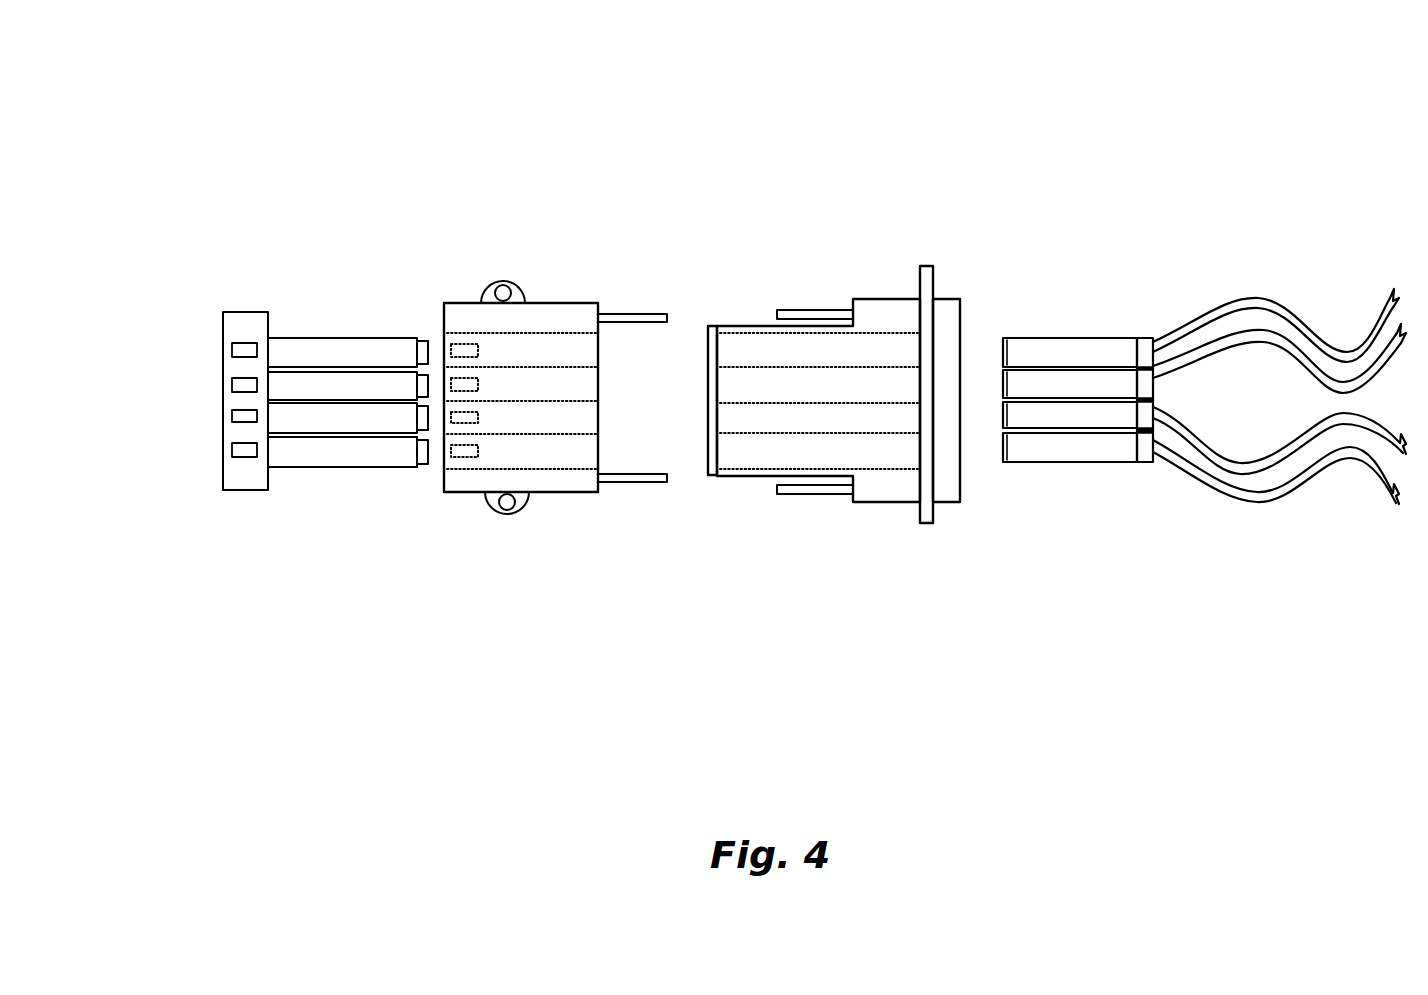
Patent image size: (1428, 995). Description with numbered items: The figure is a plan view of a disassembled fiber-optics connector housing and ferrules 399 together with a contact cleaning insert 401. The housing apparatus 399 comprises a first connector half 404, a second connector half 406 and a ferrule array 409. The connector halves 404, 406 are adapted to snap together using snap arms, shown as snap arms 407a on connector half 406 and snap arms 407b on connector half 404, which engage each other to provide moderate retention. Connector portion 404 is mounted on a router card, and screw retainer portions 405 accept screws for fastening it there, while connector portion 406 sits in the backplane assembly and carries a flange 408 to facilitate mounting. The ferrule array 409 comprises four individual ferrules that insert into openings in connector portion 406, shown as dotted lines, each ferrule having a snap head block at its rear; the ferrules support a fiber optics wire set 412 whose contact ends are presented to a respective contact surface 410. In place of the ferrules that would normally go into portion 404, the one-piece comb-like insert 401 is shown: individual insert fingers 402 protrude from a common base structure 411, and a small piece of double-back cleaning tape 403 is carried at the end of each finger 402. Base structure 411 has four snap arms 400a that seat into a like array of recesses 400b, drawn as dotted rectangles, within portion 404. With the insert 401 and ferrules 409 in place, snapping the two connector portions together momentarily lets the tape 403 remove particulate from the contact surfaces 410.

The fiber-optics connector housing and ferrules 399 is at (1020, 162).
The snap arms 400a is at (227, 415).
The recesses 400b is at (459, 380).
The cleaning insert 401 is at (178, 362).
The insert fingers 402 is at (322, 470).
The cleaning tape 403 is at (420, 466).
The first connector half 404 is at (537, 212).
The screw retainer portions 405 is at (507, 517).
The second connector half 406 is at (760, 560).
The snap arms 407a is at (807, 310).
The snap arms 407b is at (657, 484).
The flange 408 is at (934, 508).
The ferrule array 409 is at (1093, 295).
The contact surface 410 is at (707, 375).
The base structure 411 is at (245, 312).
The fiber optics wire set 412 is at (1314, 506).